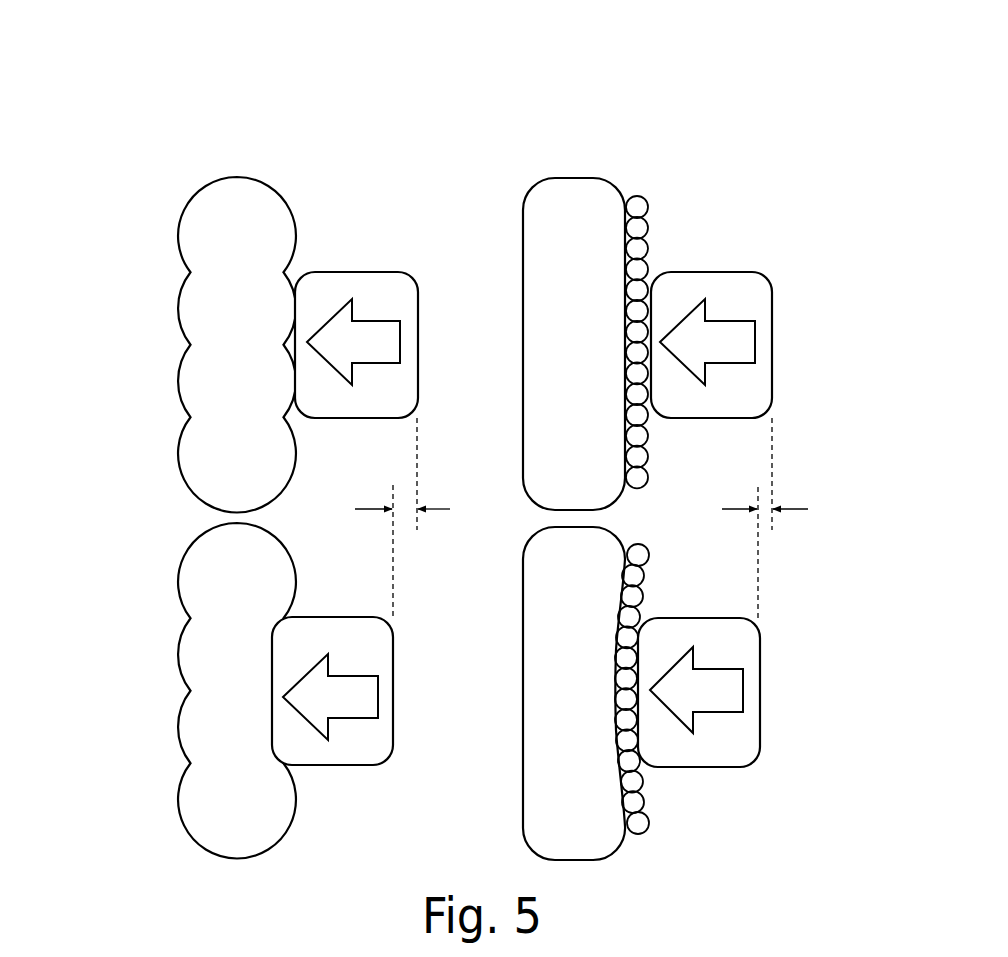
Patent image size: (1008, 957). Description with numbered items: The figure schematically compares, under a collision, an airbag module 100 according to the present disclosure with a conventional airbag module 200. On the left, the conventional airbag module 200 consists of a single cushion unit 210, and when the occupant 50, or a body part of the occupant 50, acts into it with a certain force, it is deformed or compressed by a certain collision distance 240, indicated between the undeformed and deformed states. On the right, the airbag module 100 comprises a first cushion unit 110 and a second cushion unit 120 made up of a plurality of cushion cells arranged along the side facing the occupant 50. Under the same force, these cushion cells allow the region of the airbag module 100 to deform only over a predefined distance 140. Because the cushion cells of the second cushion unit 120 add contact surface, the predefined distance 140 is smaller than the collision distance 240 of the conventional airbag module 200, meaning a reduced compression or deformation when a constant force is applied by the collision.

The occupant 50 is at (357, 271).
The airbag module 100 is at (621, 459).
The first cushion unit 110 is at (573, 178).
The second cushion unit 120 is at (648, 228).
The predefined distance 140 is at (765, 512).
The conventional airbag module 200 is at (177, 465).
The cushion unit 210 is at (178, 233).
The collision distance 240 is at (403, 512).